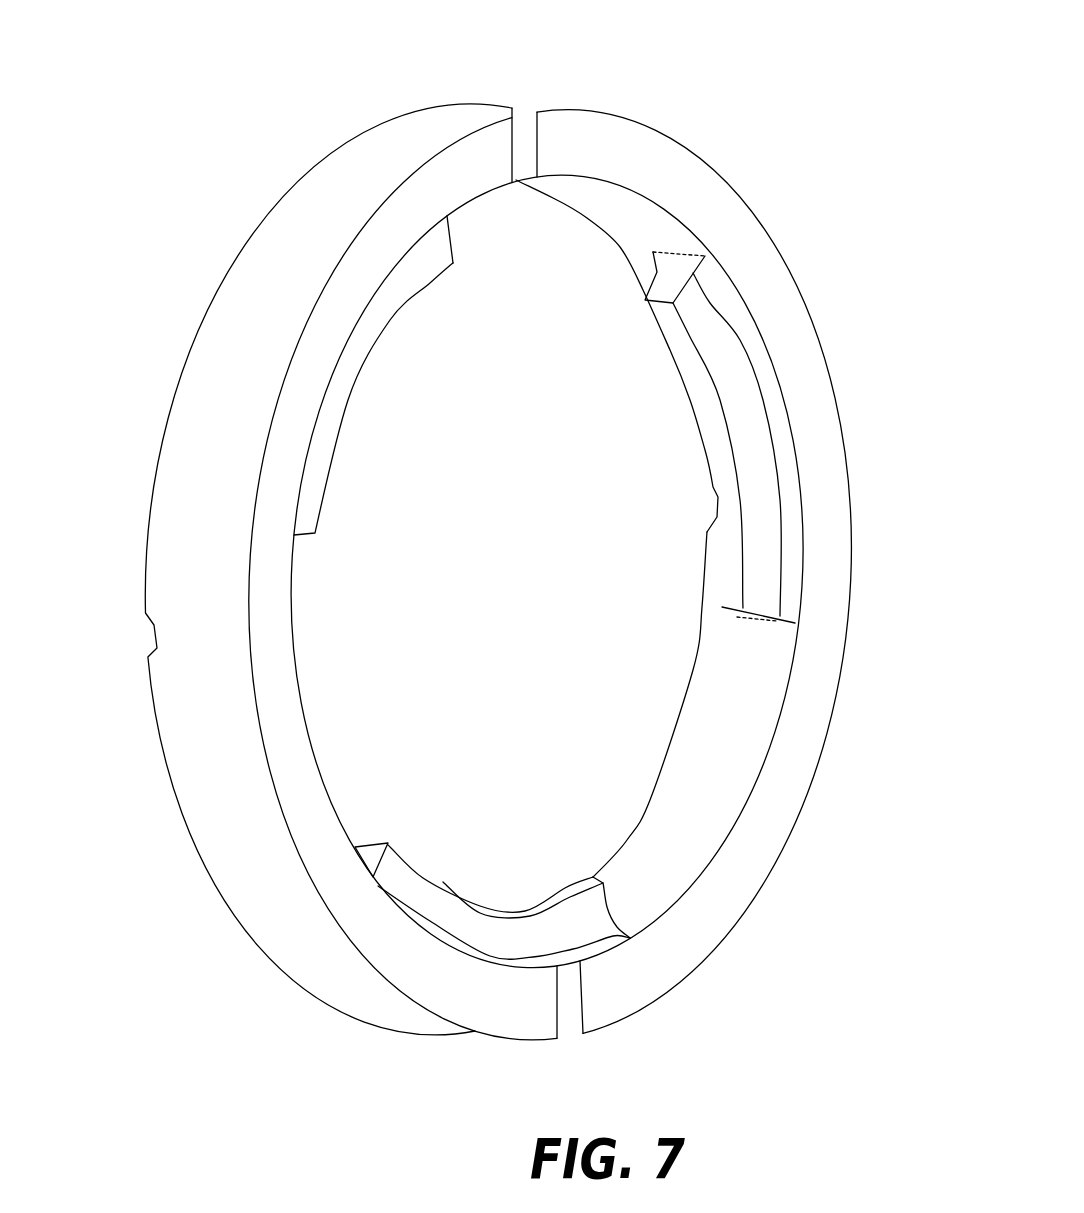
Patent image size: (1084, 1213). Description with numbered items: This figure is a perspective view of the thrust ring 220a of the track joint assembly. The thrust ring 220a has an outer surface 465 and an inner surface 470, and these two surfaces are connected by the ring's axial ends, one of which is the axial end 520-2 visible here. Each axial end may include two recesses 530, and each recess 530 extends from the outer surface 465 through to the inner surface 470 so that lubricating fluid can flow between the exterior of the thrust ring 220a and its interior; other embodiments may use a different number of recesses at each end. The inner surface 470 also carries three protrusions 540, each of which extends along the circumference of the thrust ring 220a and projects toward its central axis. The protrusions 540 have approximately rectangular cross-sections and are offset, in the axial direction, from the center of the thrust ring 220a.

The thrust ring 220a is at (821, 72).
The outer surface 465 is at (307, 220).
The inner surface 470 is at (515, 183).
The axial end 520-2 is at (833, 497).
The recess 530 is at (520, 121).
The protrusion 540 is at (685, 350).